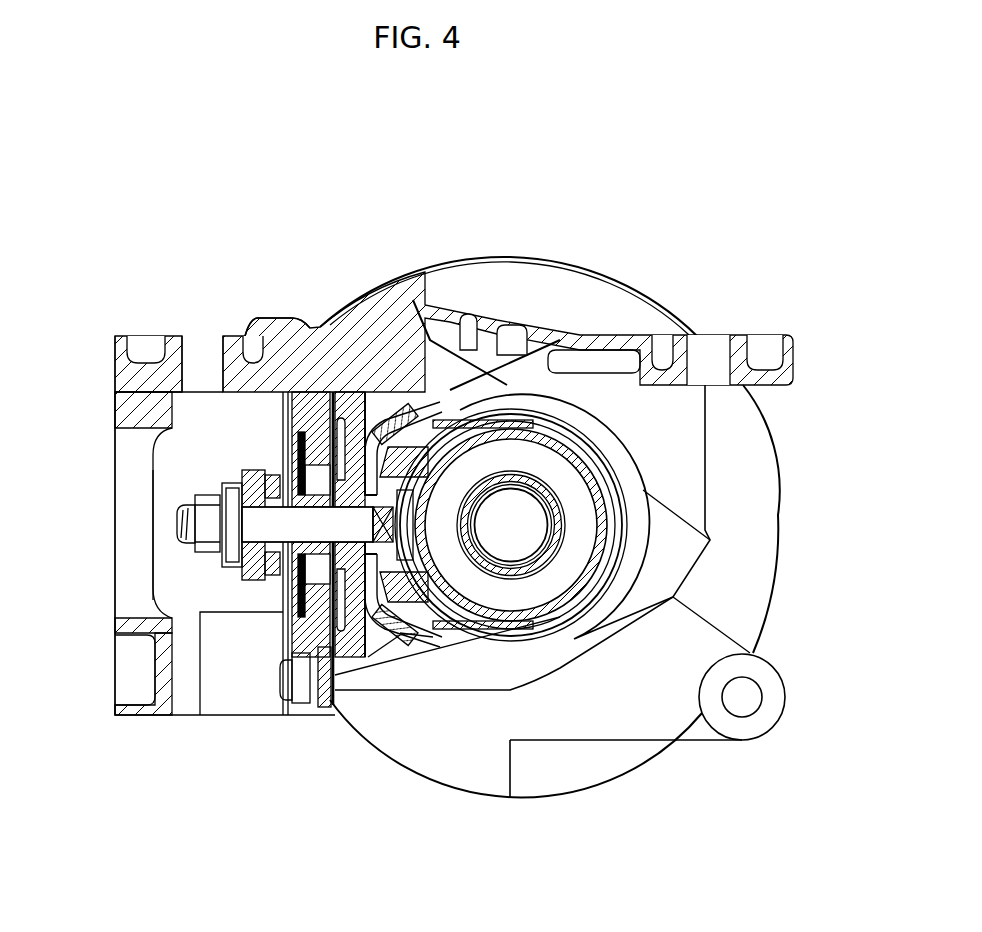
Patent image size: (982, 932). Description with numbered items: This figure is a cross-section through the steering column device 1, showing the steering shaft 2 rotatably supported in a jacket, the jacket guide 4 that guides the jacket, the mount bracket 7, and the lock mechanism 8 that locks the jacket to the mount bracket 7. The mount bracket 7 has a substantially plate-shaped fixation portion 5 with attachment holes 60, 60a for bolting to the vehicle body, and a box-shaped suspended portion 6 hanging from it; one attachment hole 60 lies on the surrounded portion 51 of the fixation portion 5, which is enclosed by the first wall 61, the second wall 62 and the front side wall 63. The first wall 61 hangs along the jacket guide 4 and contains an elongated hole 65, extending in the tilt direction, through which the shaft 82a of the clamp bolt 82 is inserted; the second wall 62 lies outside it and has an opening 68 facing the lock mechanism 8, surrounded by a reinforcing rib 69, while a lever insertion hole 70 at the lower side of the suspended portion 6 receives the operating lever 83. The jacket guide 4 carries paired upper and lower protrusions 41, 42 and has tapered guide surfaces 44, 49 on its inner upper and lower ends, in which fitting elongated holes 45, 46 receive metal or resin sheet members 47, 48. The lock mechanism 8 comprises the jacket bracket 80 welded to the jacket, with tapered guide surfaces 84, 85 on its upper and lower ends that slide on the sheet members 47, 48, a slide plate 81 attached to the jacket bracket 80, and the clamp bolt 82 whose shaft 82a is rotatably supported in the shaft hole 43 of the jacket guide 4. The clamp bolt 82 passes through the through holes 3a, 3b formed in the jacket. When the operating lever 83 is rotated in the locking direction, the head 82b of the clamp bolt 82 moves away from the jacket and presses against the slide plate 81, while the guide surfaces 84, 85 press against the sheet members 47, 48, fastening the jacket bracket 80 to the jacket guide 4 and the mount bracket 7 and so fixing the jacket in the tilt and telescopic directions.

The steering column device 1 is at (576, 176).
The steering shaft 2 is at (558, 508).
The through hole 3a is at (560, 530).
The through hole 3b is at (540, 640).
The jacket guide 4 is at (395, 652).
The fixation portion 5 is at (548, 336).
The suspended portion 6 is at (122, 410).
The mount bracket 7 is at (156, 330).
The lock mechanism 8 is at (208, 573).
The protrusion 41 is at (338, 395).
The protrusion 42 is at (325, 700).
The shaft hole 43 is at (345, 515).
The guide surface 44 is at (360, 440).
The fitting elongated hole 45 is at (397, 420).
The fitting elongated hole 46 is at (300, 605).
The sheet member 47 is at (430, 420).
The sheet member 48 is at (390, 655).
The guide surface 49 is at (412, 690).
The surrounded portion 51 is at (272, 322).
The attachment hole 60 is at (216, 345).
The attachment hole 60a is at (718, 336).
The first wall 61 is at (313, 702).
The second wall 62 is at (128, 483).
The front side wall 63 is at (200, 445).
The elongated hole 65 is at (300, 470).
The opening 68 is at (125, 565).
The reinforcing rib 69 is at (128, 625).
The lever insertion hole 70 is at (176, 692).
The jacket bracket 80 is at (470, 612).
The slide plate 81 is at (390, 400).
The clamp bolt 82 is at (176, 524).
The shaft 82a is at (257, 560).
The head 82b is at (430, 600).
The operating lever 83 is at (250, 690).
The guide surface 84 is at (448, 345).
The guide surface 85 is at (390, 690).